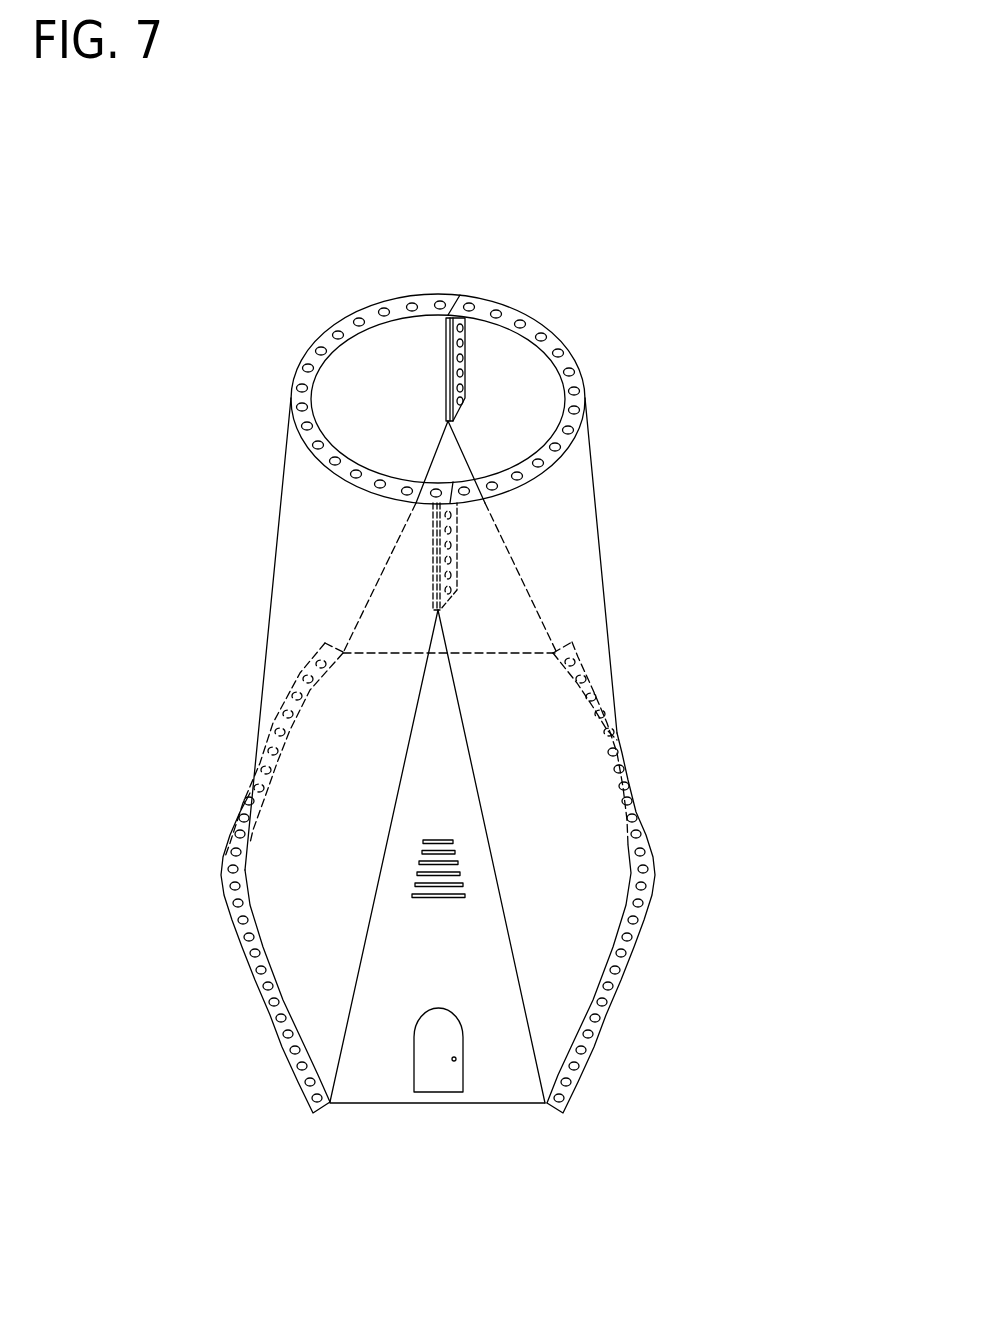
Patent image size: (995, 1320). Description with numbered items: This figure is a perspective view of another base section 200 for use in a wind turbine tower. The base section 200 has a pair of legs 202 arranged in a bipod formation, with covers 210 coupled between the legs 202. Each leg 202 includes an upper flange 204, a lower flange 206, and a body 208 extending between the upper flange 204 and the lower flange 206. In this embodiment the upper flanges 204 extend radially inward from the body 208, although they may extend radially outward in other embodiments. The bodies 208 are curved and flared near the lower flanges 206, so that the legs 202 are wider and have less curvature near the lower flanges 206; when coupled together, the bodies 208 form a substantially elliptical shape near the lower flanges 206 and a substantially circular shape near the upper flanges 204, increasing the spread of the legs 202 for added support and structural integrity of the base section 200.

The base section 200 is at (203, 323).
The leg 202 is at (245, 650).
The upper flange 204 is at (376, 300).
The lower flange 206 is at (255, 990).
The body 208 is at (262, 710).
The cover 210 is at (490, 1069).